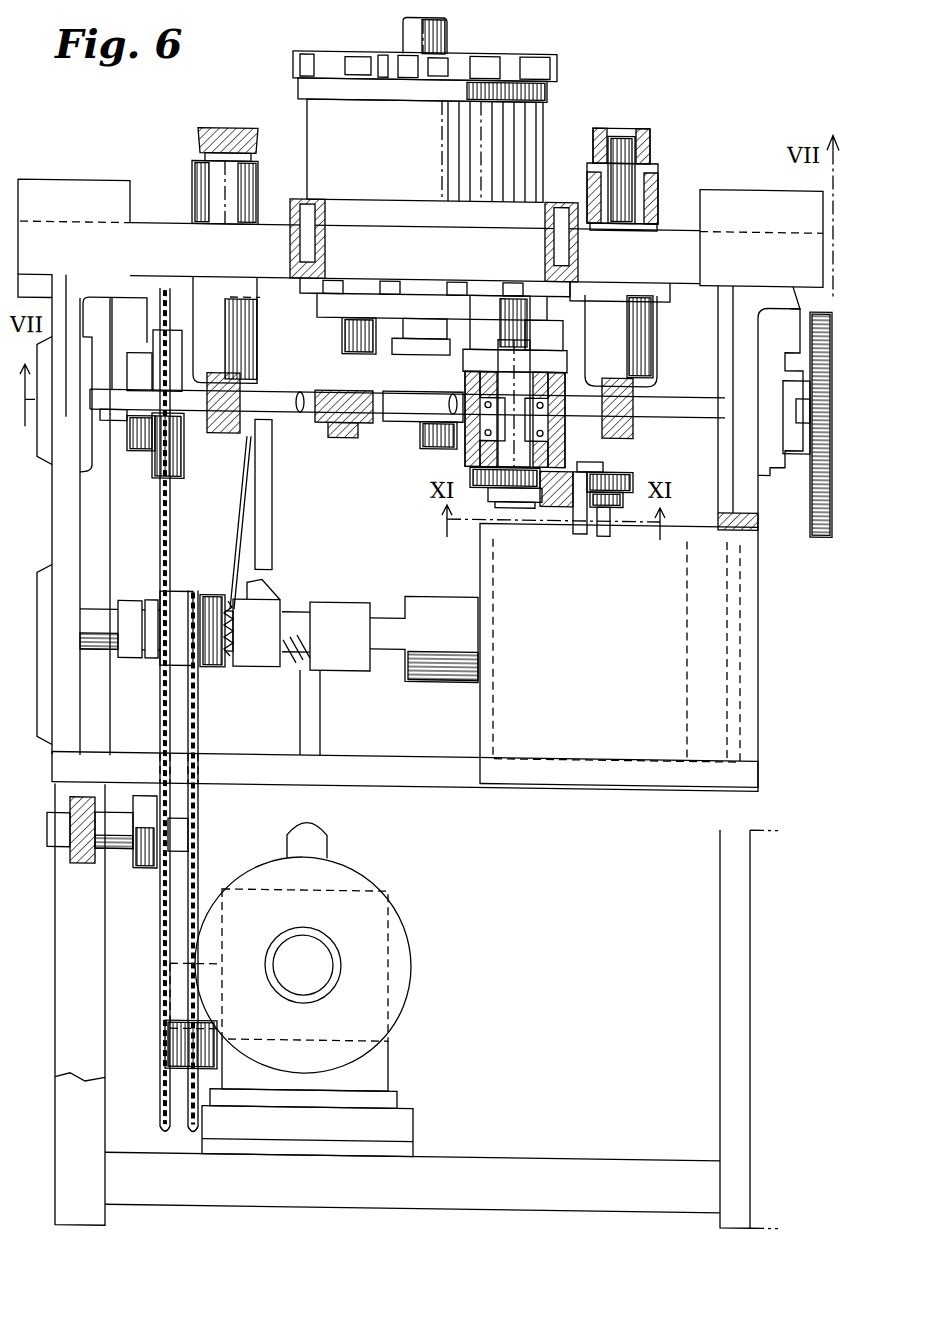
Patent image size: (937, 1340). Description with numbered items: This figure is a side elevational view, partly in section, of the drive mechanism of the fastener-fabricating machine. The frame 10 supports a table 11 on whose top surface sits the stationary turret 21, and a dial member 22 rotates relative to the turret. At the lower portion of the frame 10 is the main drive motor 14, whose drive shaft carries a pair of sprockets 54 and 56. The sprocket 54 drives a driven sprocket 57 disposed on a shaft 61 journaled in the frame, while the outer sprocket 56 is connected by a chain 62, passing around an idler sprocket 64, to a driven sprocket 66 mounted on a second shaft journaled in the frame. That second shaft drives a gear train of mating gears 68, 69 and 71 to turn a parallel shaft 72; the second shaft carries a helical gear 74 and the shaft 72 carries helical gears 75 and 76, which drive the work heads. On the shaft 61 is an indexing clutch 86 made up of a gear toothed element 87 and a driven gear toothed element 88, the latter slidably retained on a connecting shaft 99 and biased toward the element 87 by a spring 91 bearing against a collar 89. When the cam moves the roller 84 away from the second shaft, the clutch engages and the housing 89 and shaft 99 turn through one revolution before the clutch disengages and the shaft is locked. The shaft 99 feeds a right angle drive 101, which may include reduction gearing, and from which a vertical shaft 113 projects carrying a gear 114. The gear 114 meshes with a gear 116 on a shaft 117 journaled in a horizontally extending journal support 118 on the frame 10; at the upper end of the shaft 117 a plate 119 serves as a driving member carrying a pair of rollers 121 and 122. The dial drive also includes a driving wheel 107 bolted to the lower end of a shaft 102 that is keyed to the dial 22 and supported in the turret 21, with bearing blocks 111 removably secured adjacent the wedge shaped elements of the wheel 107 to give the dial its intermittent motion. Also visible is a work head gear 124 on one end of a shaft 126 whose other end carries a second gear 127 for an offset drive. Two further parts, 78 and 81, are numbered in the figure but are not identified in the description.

The frame 10 is at (45, 758).
The table 11 is at (150, 227).
The main drive motor 14 is at (385, 892).
The stationary turret 21 is at (545, 124).
The dial member 22 is at (557, 66).
The sprocket 54 is at (200, 880).
The outer sprocket 56 is at (158, 982).
The driven sprocket 57 is at (194, 594).
The shaft 61 is at (95, 638).
The chain 62 is at (152, 702).
The idler sprocket 64 is at (145, 880).
The driven sprocket 66 is at (172, 500).
The gear 68 is at (812, 318).
The gear 69 is at (815, 533).
The gear 71 is at (808, 448).
The shaft 72 is at (108, 385).
The helical gear 74 is at (340, 430).
The helical gear 75 is at (633, 376).
The helical gear 76 is at (215, 362).
The lever arm 78 is at (272, 492).
The cross bar 81 is at (290, 732).
The roller 84 is at (240, 446).
The indexing clutch 86 is at (212, 590).
The gear toothed element 87 is at (240, 680).
The driven gear toothed element 88 is at (250, 668).
The collar 89 is at (340, 602).
The spring 91 is at (282, 598).
The connecting shaft 99 is at (390, 598).
The right angle drive 101 is at (480, 704).
The shaft 102 is at (447, 40).
The driving wheel 107 is at (300, 312).
The bearing block 111 is at (342, 335).
The vertical shaft 113 is at (642, 449).
The gear 114 is at (633, 478).
The gear 116 is at (470, 470).
The shaft 117 is at (515, 505).
The journal support 118 is at (565, 378).
The plate 119 is at (655, 320).
The roller 121 is at (540, 327).
The roller 122 is at (420, 353).
The gear 124 is at (352, 440).
The shaft 126 is at (258, 165).
The second gear 127 is at (198, 142).